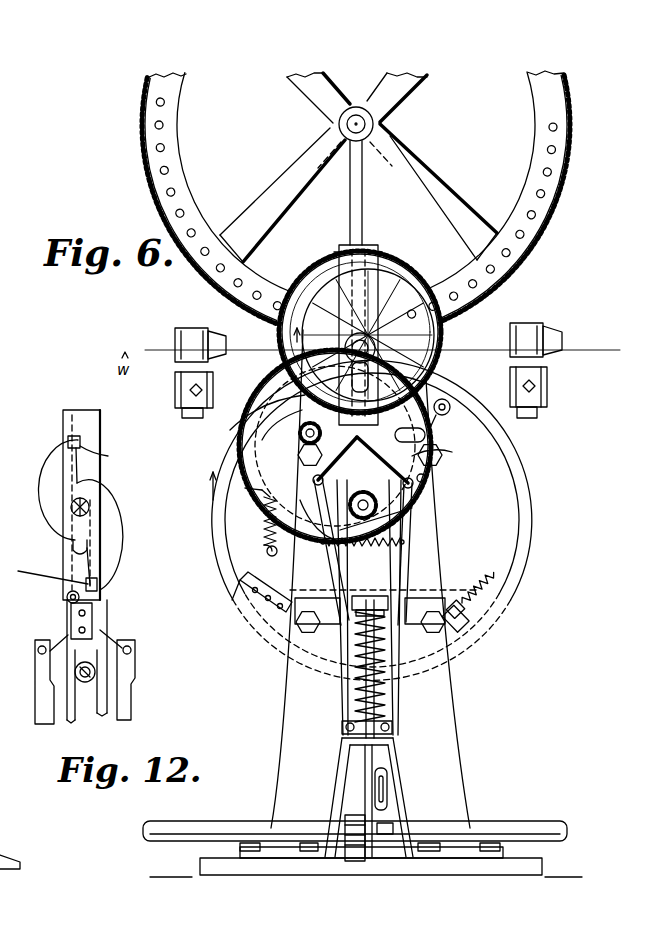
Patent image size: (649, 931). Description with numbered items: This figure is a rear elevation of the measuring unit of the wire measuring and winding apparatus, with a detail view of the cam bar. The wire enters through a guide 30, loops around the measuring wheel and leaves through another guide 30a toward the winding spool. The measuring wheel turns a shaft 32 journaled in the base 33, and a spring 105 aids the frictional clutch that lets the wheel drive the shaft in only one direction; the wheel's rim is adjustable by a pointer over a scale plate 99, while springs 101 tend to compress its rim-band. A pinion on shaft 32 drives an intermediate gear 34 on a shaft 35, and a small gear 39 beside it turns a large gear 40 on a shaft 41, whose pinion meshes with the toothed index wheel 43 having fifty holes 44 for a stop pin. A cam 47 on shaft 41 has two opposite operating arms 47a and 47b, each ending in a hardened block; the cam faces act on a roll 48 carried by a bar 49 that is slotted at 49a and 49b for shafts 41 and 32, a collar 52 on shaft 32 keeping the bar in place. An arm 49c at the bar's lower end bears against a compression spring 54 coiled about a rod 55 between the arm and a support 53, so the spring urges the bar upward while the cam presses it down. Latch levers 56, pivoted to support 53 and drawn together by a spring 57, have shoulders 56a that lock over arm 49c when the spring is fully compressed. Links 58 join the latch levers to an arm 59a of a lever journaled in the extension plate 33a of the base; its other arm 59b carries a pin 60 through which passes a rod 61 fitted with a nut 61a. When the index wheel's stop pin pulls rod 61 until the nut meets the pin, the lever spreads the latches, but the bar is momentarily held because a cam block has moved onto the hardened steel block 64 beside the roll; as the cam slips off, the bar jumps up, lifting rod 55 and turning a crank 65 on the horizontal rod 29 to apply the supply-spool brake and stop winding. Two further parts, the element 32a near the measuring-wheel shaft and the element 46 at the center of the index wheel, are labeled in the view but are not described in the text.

In FIG. 6, the horizontal rod 29 is at (185, 826).
In FIG. 12, the horizontal rod 29 is at (5, 846).
In FIG. 6, the guide 30 is at (185, 328).
In FIG. 6, the guide 30a is at (538, 330).
In FIG. 6, the shaft 32 is at (426, 479).
In FIG. 12, the shaft 32 is at (96, 672).
In FIG. 6, the spring end 32a is at (268, 545).
In FIG. 6, the base 33 is at (290, 733).
In FIG. 6, the extension plate 33a is at (433, 512).
In FIG. 6, the intermediate gear 34 is at (235, 430).
In FIG. 6, the shaft 35 is at (280, 433).
In FIG. 6, the small gear 39 is at (300, 440).
In FIG. 6, the large gear 40 is at (280, 331).
In FIG. 6, the shaft 41 is at (442, 331).
In FIG. 12, the shaft 41 is at (74, 512).
In FIG. 6, the index wheel 43 is at (541, 226).
In FIG. 6, the holes 44 is at (550, 193).
In FIG. 6, the hub 46 is at (374, 125).
In FIG. 12, the cam 47 is at (104, 515).
In FIG. 6, the operating arm 47a is at (396, 292).
In FIG. 12, the operating arm 47a is at (68, 443).
In FIG. 6, the operating arm 47b is at (213, 410).
In FIG. 12, the operating arm 47b is at (100, 594).
In FIG. 12, the roll 48 is at (67, 597).
In FIG. 6, the bar 49 is at (345, 252).
In FIG. 12, the bar 49 is at (62, 414).
In FIG. 6, the slot 49a is at (442, 357).
In FIG. 12, the slot 49a is at (73, 548).
In FIG. 6, the slot 49b is at (413, 508).
In FIG. 12, the slot 49b is at (90, 714).
In FIG. 6, the arm 49c is at (468, 620).
In FIG. 6, the collar 52 is at (350, 512).
In FIG. 6, the support 53 is at (398, 761).
In FIG. 6, the spring 54 is at (386, 693).
In FIG. 6, the rod 55 is at (364, 757).
In FIG. 6, the latch levers 56 is at (345, 672).
In FIG. 12, the latch levers 56 is at (40, 700).
In FIG. 6, the shoulders 56a is at (300, 628).
In FIG. 6, the spring 57 is at (345, 555).
In FIG. 6, the links 58 is at (316, 478).
In FIG. 12, the links 58 is at (55, 640).
In FIG. 6, the arm 59a is at (455, 452).
In FIG. 6, the arm 59b is at (497, 418).
In FIG. 6, the pin 60 is at (446, 414).
In FIG. 6, the rod 61 is at (424, 436).
In FIG. 6, the nut 61a is at (458, 432).
In FIG. 6, the hardened steel block 64 is at (250, 486).
In FIG. 12, the hardened steel block 64 is at (93, 608).
In FIG. 6, the crank 65 is at (366, 812).
In FIG. 6, the scale plate 99 is at (262, 592).
In FIG. 6, the springs 101 is at (472, 585).
In FIG. 6, the spring 105 is at (265, 505).